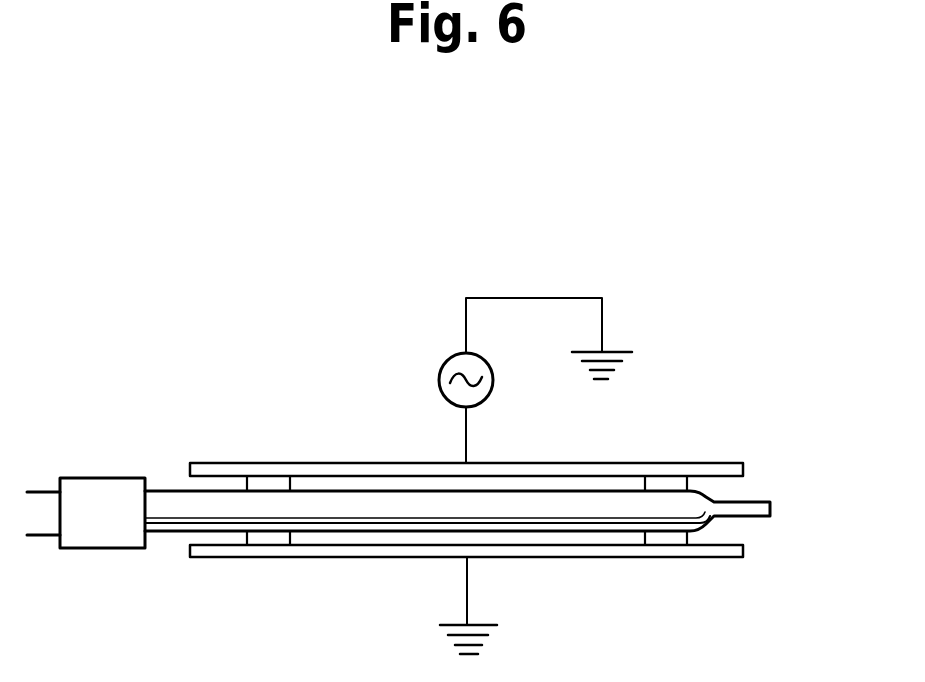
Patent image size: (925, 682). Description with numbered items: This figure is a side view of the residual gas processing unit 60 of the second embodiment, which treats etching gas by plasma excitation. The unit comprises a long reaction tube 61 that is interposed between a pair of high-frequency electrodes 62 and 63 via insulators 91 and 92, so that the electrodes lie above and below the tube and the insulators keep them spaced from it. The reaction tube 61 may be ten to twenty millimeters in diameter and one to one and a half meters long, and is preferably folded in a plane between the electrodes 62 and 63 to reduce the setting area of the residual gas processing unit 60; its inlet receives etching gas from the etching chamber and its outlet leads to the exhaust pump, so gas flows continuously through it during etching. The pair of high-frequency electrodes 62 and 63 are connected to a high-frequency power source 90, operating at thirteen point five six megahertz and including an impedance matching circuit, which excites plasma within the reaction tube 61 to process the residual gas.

The residual gas processing unit 60 is at (156, 312).
The reaction tube 61 is at (313, 503).
The high-frequency electrode 62 is at (733, 472).
The high-frequency electrode 63 is at (733, 548).
The high-frequency power source 90 is at (440, 374).
The insulator 91 is at (270, 540).
The insulator 92 is at (667, 535).